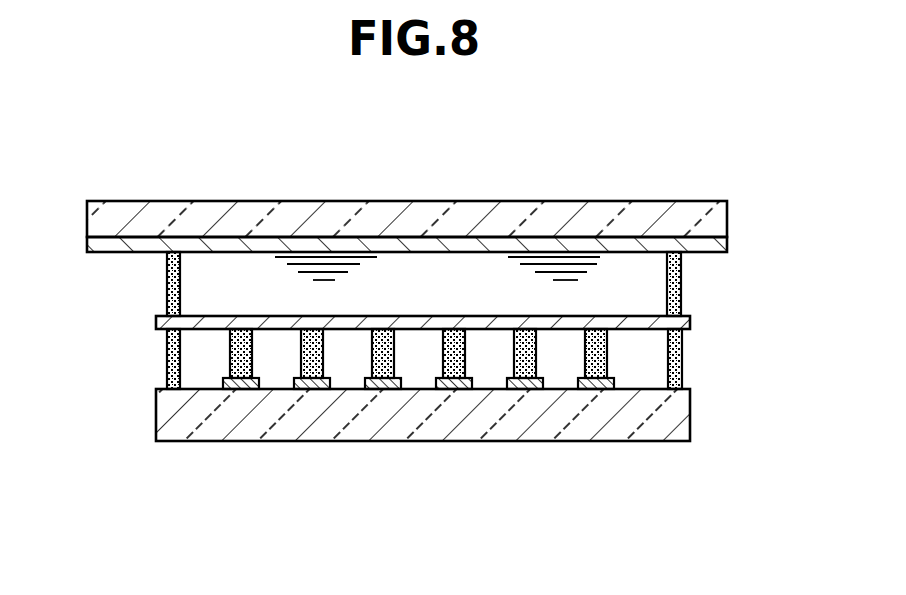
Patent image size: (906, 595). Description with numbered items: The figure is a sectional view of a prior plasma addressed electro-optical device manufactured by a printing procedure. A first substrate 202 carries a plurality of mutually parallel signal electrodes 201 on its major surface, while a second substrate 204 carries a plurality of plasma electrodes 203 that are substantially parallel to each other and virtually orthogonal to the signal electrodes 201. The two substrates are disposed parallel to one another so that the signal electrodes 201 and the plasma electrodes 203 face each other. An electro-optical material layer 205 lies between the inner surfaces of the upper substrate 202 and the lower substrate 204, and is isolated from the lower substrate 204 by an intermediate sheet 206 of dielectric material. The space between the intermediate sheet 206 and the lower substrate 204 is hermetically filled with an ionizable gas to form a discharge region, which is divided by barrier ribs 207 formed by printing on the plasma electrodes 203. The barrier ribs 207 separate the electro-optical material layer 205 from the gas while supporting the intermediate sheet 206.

The signal electrodes 201 is at (152, 251).
The first substrate 202 is at (660, 203).
The plasma electrodes 203 is at (593, 392).
The second substrate 204 is at (347, 418).
The electro-optical material layer 205 is at (273, 276).
The intermediate sheet 206 is at (204, 329).
The barrier ribs 207 is at (509, 348).